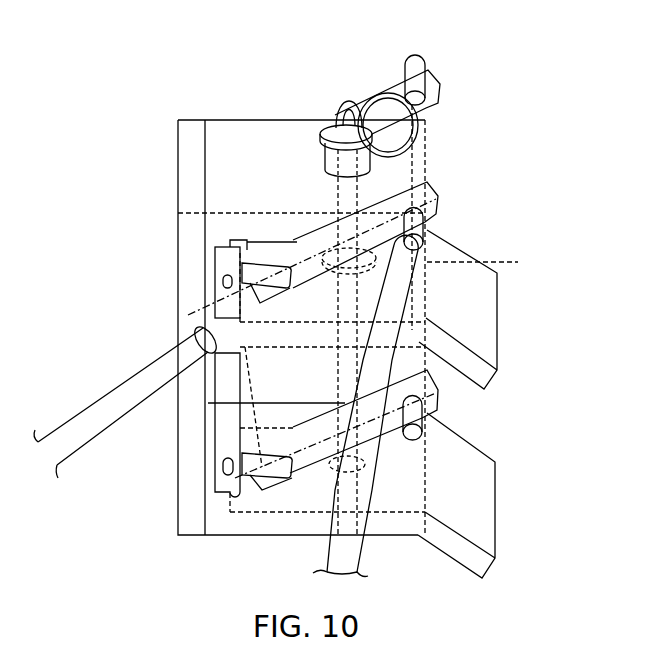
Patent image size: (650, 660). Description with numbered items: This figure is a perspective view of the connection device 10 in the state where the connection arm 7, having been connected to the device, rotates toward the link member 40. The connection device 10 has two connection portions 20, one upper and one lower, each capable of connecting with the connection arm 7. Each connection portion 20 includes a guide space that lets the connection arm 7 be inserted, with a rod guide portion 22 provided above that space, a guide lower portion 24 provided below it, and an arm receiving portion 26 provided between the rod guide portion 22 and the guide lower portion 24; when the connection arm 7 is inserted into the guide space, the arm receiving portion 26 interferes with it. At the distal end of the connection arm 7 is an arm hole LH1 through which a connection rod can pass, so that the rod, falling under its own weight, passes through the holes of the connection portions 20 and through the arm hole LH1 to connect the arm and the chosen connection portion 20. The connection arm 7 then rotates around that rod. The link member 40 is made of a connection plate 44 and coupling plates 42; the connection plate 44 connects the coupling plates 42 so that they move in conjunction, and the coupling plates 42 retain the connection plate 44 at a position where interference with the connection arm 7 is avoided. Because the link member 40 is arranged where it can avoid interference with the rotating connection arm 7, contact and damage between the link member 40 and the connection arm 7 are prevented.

The connection device 10 is at (504, 66).
The rod guide portion 22 is at (255, 140).
The guide lower portion 24 is at (427, 310).
The arm receiving portion 26 is at (440, 197).
The connection arm 7 is at (427, 283).
The connection portion 20 is at (487, 223).
The arm hole LH1 is at (497, 264).
The link member 40 is at (204, 350).
The coupling plate 42 is at (256, 263).
The connection plate 44 is at (217, 263).